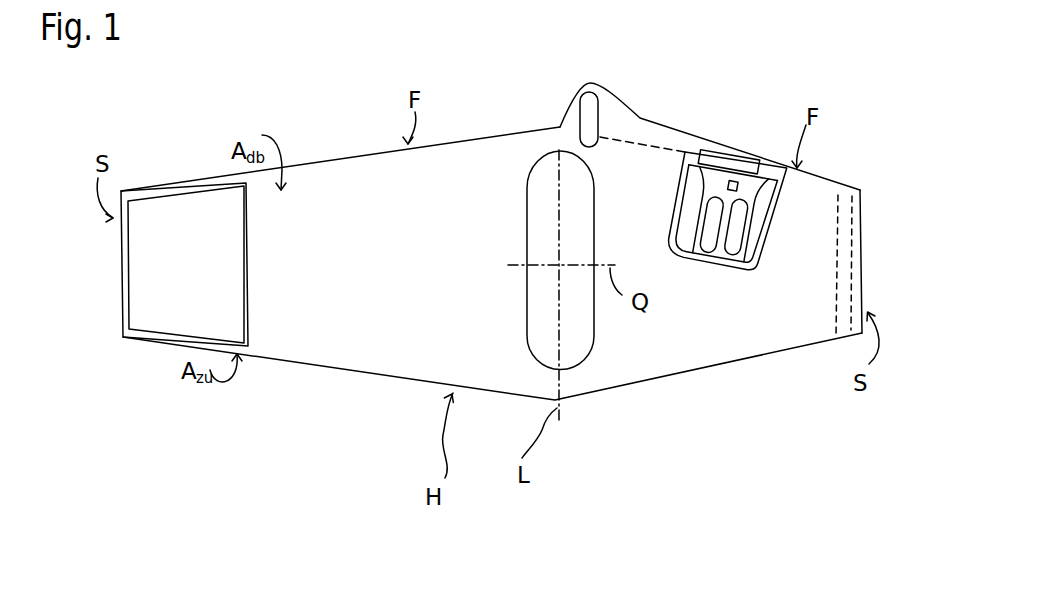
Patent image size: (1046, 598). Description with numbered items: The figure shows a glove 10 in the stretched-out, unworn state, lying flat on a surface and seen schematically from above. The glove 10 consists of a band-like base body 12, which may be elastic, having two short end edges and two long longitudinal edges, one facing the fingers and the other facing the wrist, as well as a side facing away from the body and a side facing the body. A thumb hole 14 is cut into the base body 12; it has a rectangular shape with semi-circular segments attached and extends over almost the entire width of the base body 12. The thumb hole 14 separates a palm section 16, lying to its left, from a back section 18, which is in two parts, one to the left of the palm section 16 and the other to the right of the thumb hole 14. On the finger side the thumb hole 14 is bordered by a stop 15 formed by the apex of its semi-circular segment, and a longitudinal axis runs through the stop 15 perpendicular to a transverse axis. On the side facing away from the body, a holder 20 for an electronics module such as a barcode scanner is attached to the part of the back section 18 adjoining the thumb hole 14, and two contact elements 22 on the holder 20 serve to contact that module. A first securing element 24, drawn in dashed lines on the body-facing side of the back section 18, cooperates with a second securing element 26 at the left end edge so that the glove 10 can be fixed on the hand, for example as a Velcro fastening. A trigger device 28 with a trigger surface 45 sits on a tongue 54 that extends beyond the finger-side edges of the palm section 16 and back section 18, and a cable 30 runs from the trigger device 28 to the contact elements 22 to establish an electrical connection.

The glove 10 is at (232, 58).
The band-like base body 12 is at (311, 305).
The thumb hole 14 is at (577, 353).
The stop 15 is at (559, 142).
The palm section 16 is at (377, 245).
The back section 18 is at (160, 190).
The holder 20 is at (773, 172).
The contact elements 22 is at (731, 182).
The first securing element 24 is at (841, 192).
The second securing element 26 is at (146, 283).
The trigger device 28 is at (593, 90).
The cable 30 is at (643, 143).
The trigger surface 45 is at (588, 118).
The tongue 54 is at (615, 95).